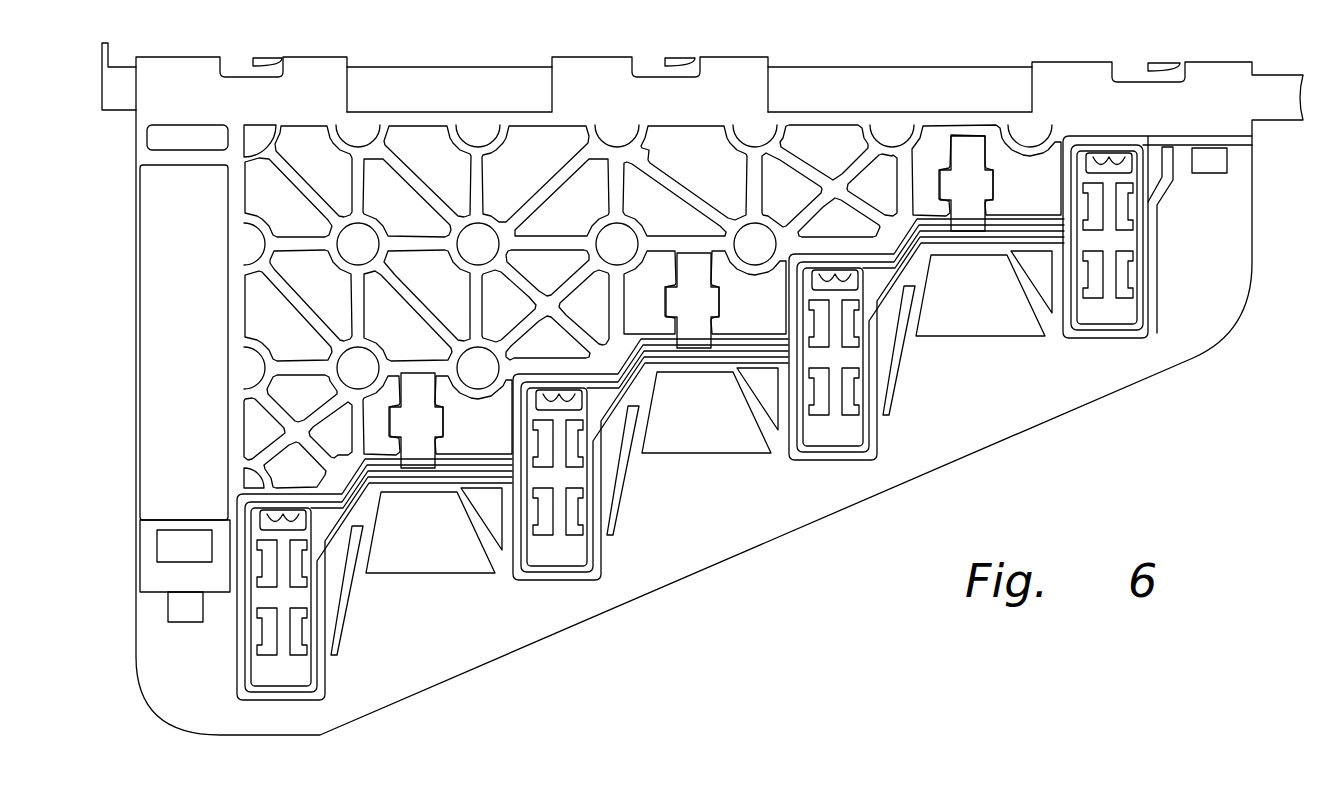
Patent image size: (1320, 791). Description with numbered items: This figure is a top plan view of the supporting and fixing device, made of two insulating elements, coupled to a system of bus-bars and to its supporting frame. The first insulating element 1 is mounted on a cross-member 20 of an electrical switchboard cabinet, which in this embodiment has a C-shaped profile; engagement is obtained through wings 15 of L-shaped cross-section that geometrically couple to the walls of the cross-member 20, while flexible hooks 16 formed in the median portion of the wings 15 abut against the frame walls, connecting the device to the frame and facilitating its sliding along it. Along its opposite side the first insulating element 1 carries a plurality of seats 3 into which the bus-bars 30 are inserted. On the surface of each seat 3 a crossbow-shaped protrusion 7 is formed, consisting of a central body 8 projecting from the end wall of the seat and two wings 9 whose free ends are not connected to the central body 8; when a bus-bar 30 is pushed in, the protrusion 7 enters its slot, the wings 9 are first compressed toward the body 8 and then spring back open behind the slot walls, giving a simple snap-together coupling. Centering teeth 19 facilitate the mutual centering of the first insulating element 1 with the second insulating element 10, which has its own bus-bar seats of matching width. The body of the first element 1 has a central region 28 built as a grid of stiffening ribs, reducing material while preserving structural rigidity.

The first insulating element 1 is at (136, 389).
The seats 3 is at (577, 397).
The protrusion 7 is at (817, 268).
The central body 8 is at (838, 266).
The wings 9 is at (647, 482).
The second insulating element 10 is at (144, 688).
The wings 15 is at (330, 75).
The flexible hooks 16 is at (243, 60).
The centering teeth 19 is at (1067, 225).
The cross-member 20 is at (818, 82).
The central region 28 is at (508, 170).
The bus-bars 30 is at (302, 672).